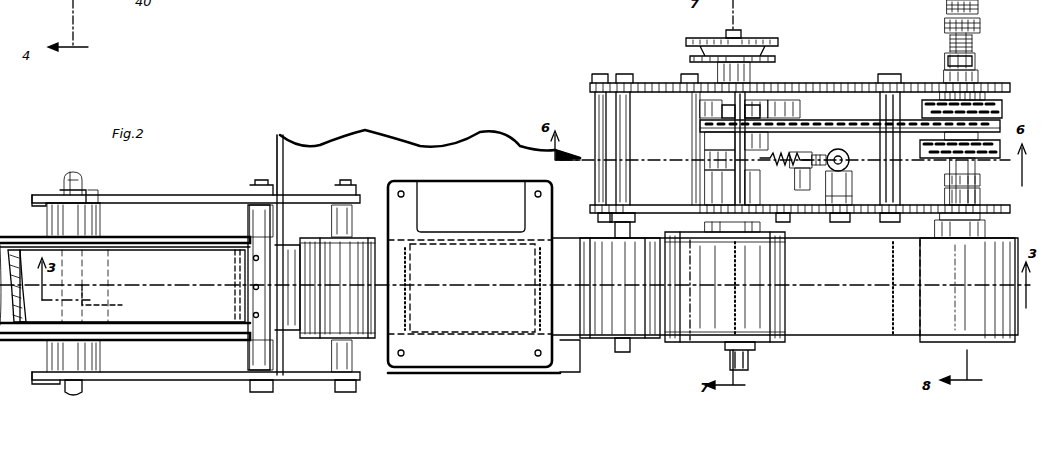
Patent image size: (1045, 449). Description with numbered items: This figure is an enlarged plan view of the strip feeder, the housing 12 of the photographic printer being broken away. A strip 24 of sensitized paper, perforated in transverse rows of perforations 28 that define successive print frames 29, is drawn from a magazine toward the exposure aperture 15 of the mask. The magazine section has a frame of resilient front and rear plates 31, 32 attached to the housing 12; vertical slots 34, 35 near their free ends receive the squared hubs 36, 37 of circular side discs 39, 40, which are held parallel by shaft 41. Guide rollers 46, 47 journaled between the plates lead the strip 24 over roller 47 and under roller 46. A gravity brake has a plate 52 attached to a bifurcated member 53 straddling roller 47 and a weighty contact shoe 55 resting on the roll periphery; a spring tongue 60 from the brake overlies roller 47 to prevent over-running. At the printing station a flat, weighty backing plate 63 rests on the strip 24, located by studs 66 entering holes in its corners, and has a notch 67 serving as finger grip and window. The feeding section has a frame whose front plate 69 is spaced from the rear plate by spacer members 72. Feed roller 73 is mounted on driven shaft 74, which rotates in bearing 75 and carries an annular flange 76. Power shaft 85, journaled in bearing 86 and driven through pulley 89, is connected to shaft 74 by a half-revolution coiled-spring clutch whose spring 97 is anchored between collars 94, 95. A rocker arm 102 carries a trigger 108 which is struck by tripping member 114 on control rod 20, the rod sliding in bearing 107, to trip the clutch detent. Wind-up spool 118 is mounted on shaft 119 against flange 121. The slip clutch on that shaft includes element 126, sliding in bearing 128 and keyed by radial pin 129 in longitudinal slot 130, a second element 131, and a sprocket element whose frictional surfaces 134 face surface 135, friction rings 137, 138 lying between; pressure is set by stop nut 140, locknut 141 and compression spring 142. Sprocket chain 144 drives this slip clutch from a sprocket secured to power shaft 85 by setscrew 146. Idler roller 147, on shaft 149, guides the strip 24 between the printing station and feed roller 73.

The housing 12 is at (375, 140).
The aperture 15 is at (470, 265).
The control rod 20 is at (844, 157).
The strip 24 is at (578, 340).
The perforations 28 is at (412, 266).
The print frame 29 is at (857, 288).
The front plate 31 is at (206, 376).
The rear plate 32 is at (214, 196).
The vertical slot 34 is at (38, 384).
The vertical slot 35 is at (94, 190).
The squared hub 36 is at (94, 384).
The squared hub 37 is at (60, 192).
The side disc 39 is at (112, 358).
The side disc 40 is at (155, 232).
The shaft 41 is at (112, 300).
The guide roller 46 is at (346, 338).
The guide roller 47 is at (286, 250).
The plate 52 is at (132, 286).
The bifurcated member 53 is at (248, 218).
The contact shoe 55 is at (10, 254).
The spring tongue 60 is at (314, 244).
The backing plate 63 is at (500, 368).
The studs 66 is at (402, 191).
The notch 67 is at (434, 196).
The front plate 69 is at (986, 200).
The spacer members 72 is at (606, 110).
The feed roller 73 is at (686, 344).
The driven shaft 74 is at (748, 368).
The bearing 75 is at (690, 192).
The annular flange 76 is at (654, 86).
The power shaft 85 is at (738, 34).
The bearing 86 is at (758, 94).
The pulley 89 is at (770, 40).
The anchoring collar 94 is at (704, 182).
The anchoring collar 95 is at (716, 141).
The clutch spring 97 is at (700, 158).
The rocker arm 102 is at (812, 170).
The bearing 107 is at (847, 194).
The trigger 108 is at (812, 218).
The tripping member 114 is at (850, 172).
The spool 118 is at (918, 344).
The shaft 119 is at (980, 180).
The flange 121 is at (985, 228).
The clutch element 126 is at (988, 98).
The bearing 128 is at (944, 76).
The radial pin 129 is at (975, 60).
The longitudinal slot 130 is at (945, 64).
The clutch element 131 is at (946, 168).
The frictional surfaces 134 is at (992, 131).
The frictional surface 135 is at (922, 154).
The friction ring 137 is at (1002, 106).
The friction ring 138 is at (948, 174).
The stop nut 140 is at (944, 24).
The locknut 141 is at (944, 4).
The compression spring 142 is at (948, 42).
The sprocket chain 144 is at (817, 122).
The setscrew 146 is at (764, 114).
The idler roller 147 is at (620, 352).
The shaft 149 is at (635, 216).